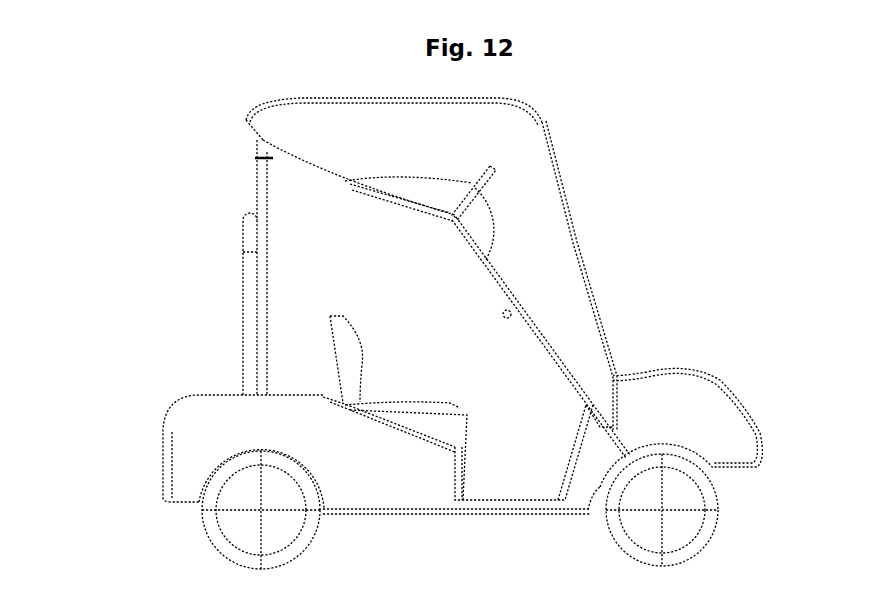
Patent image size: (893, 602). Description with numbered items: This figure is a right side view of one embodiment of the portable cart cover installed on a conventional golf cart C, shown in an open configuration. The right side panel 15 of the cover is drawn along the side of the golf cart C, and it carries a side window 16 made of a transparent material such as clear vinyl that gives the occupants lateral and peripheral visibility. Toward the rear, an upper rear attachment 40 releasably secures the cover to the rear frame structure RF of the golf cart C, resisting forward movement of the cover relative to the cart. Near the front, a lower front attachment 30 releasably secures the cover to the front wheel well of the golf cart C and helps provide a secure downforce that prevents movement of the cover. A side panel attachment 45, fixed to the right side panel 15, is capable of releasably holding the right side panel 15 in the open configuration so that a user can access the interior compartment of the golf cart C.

The right side panel 15 is at (362, 136).
The upper rear attachment 40 is at (260, 153).
The rear frame structure RF is at (260, 191).
The side panel attachment 45 is at (490, 162).
The side window 16 is at (492, 226).
The lower front attachment 30 is at (618, 437).
The golf cart C is at (114, 432).